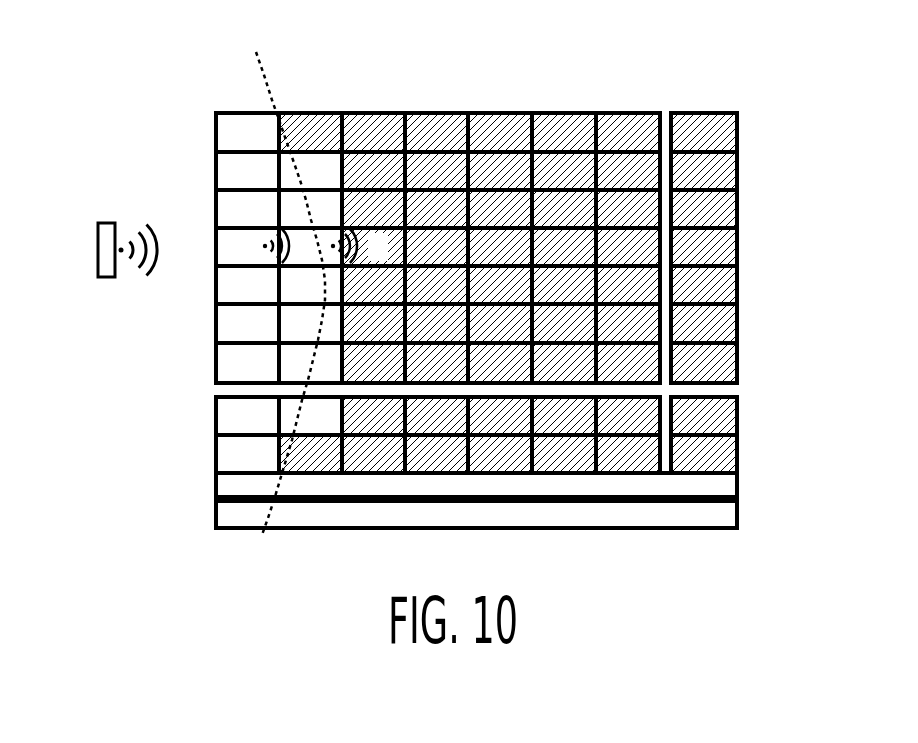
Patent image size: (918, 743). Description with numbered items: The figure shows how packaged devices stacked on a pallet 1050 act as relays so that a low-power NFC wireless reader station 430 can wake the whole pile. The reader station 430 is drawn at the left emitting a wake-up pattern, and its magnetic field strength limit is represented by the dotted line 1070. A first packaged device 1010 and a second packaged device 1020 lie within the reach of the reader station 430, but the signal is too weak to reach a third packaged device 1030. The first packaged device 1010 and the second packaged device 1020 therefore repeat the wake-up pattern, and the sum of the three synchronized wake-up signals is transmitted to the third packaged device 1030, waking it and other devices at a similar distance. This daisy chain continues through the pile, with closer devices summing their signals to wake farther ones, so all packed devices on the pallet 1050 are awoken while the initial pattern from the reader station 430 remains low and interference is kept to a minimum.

The wireless reader station 430 is at (97, 245).
The first packaged device 1010 is at (231, 247).
The second packaged device 1020 is at (302, 224).
The third packaged device 1030 is at (367, 223).
The pallet 1050 is at (723, 484).
The dotted line 1070 is at (280, 486).